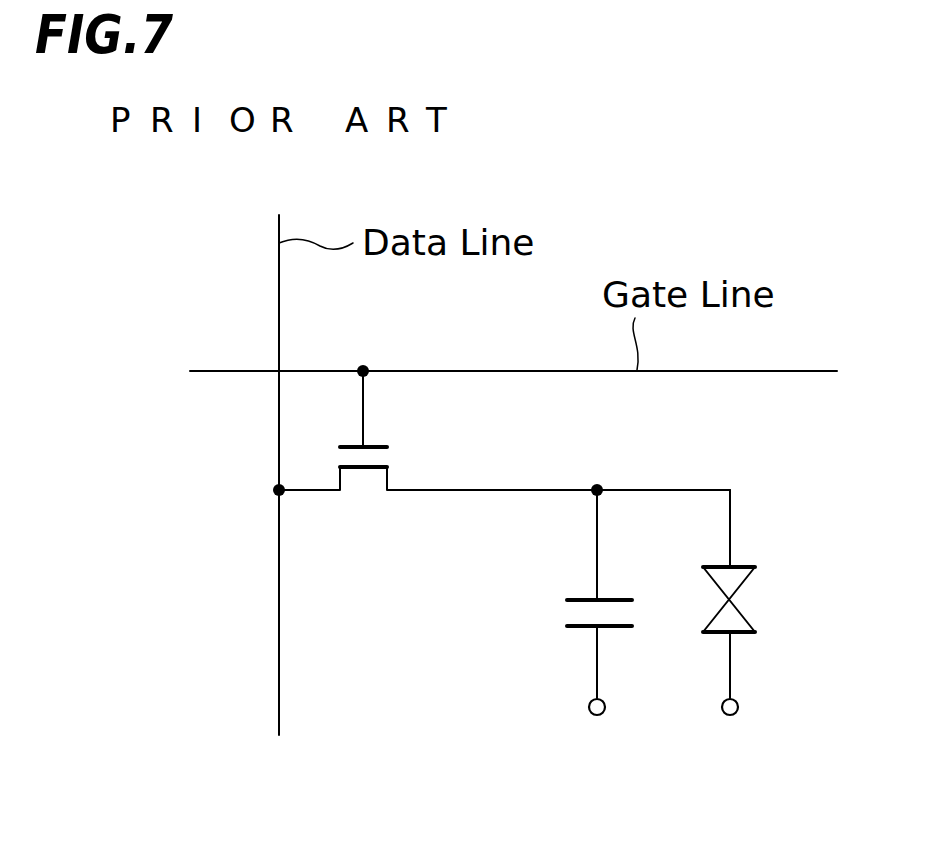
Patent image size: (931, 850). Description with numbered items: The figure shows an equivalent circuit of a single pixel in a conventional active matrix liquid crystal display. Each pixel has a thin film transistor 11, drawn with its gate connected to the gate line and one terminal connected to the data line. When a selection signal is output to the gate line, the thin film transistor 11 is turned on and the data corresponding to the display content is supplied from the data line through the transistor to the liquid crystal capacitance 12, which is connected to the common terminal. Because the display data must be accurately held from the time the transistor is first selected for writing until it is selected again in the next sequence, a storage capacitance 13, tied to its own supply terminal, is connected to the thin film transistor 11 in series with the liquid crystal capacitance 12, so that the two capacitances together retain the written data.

The thin film transistor 11 is at (364, 492).
The liquid crystal capacitance 12 is at (765, 638).
The storage capacitance 13 is at (558, 635).